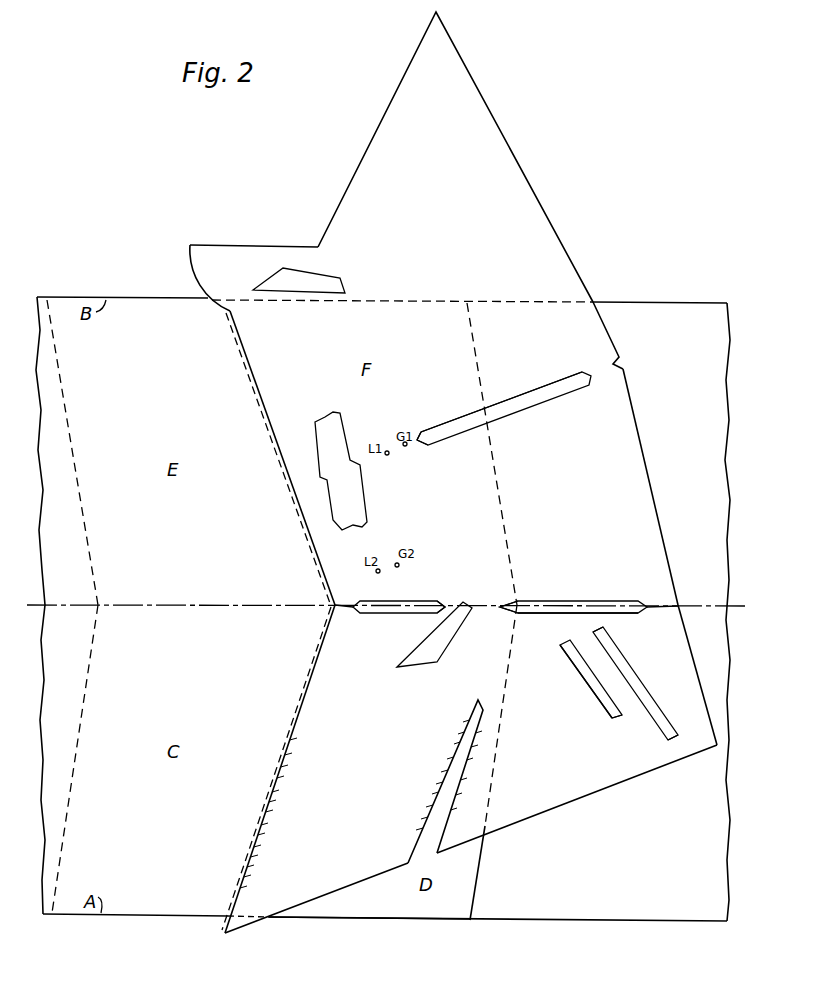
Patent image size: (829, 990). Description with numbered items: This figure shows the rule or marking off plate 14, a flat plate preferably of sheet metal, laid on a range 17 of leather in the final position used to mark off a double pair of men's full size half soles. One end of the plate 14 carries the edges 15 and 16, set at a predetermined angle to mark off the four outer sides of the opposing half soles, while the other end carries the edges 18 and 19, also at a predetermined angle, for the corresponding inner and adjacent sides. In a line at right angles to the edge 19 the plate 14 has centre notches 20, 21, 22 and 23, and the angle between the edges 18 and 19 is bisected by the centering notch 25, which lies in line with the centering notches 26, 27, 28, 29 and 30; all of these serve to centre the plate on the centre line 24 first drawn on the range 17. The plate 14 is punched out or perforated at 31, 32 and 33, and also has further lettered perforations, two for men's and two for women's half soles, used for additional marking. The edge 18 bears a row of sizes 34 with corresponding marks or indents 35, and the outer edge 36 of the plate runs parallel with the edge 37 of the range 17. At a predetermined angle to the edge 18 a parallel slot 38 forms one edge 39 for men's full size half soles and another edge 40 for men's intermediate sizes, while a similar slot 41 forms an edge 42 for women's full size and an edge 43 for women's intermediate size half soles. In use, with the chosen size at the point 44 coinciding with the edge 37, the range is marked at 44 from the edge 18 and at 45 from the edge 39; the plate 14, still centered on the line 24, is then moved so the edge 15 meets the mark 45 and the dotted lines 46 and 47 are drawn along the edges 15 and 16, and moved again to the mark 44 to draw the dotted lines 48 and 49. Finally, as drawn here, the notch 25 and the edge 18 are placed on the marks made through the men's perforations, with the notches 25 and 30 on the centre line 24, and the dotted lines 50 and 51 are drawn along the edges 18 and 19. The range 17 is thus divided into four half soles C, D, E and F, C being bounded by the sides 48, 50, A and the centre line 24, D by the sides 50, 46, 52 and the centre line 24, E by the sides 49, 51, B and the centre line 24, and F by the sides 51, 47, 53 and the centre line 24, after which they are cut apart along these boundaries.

The rule or marking off plate 14 is at (307, 257).
The edge 15 is at (654, 494).
The edge 16 is at (558, 237).
The range 17 is at (660, 348).
The edge 18 is at (318, 664).
The edge 19 is at (256, 378).
The centre notch 20 is at (296, 491).
The centre notch 21 is at (421, 448).
The centre notch 22 is at (590, 383).
The centre notch 23 is at (624, 367).
The centre line 24 is at (386, 594).
The centering notch 25 is at (330, 608).
The centering notch 26 is at (393, 622).
The centering notch 27 is at (443, 600).
The centering notch 28 is at (500, 600).
The centering notch 29 is at (645, 602).
The centering notch 30 is at (682, 606).
The perforation 31 is at (524, 405).
The perforation 32 is at (411, 608).
The perforation 33 is at (557, 608).
The row of sizes 34 is at (258, 905).
The marks or indents 35 is at (229, 906).
The outer edge 36 is at (616, 788).
The edge of range 37 is at (683, 922).
The parallel slot 38 is at (650, 702).
The edge 39 is at (668, 722).
The edge 40 is at (660, 730).
The slot 41 is at (584, 678).
The edge 42 is at (616, 702).
The edge 43 is at (602, 713).
The point or mark 44 is at (50, 915).
The mark 45 is at (471, 920).
The dotted line 46 is at (458, 763).
The dotted line 47 is at (495, 478).
The dotted line 48 is at (80, 740).
The dotted line 49 is at (84, 511).
The dotted line 50 is at (292, 726).
The dotted line 51 is at (240, 350).
The side 52 is at (403, 920).
The side 53 is at (378, 300).